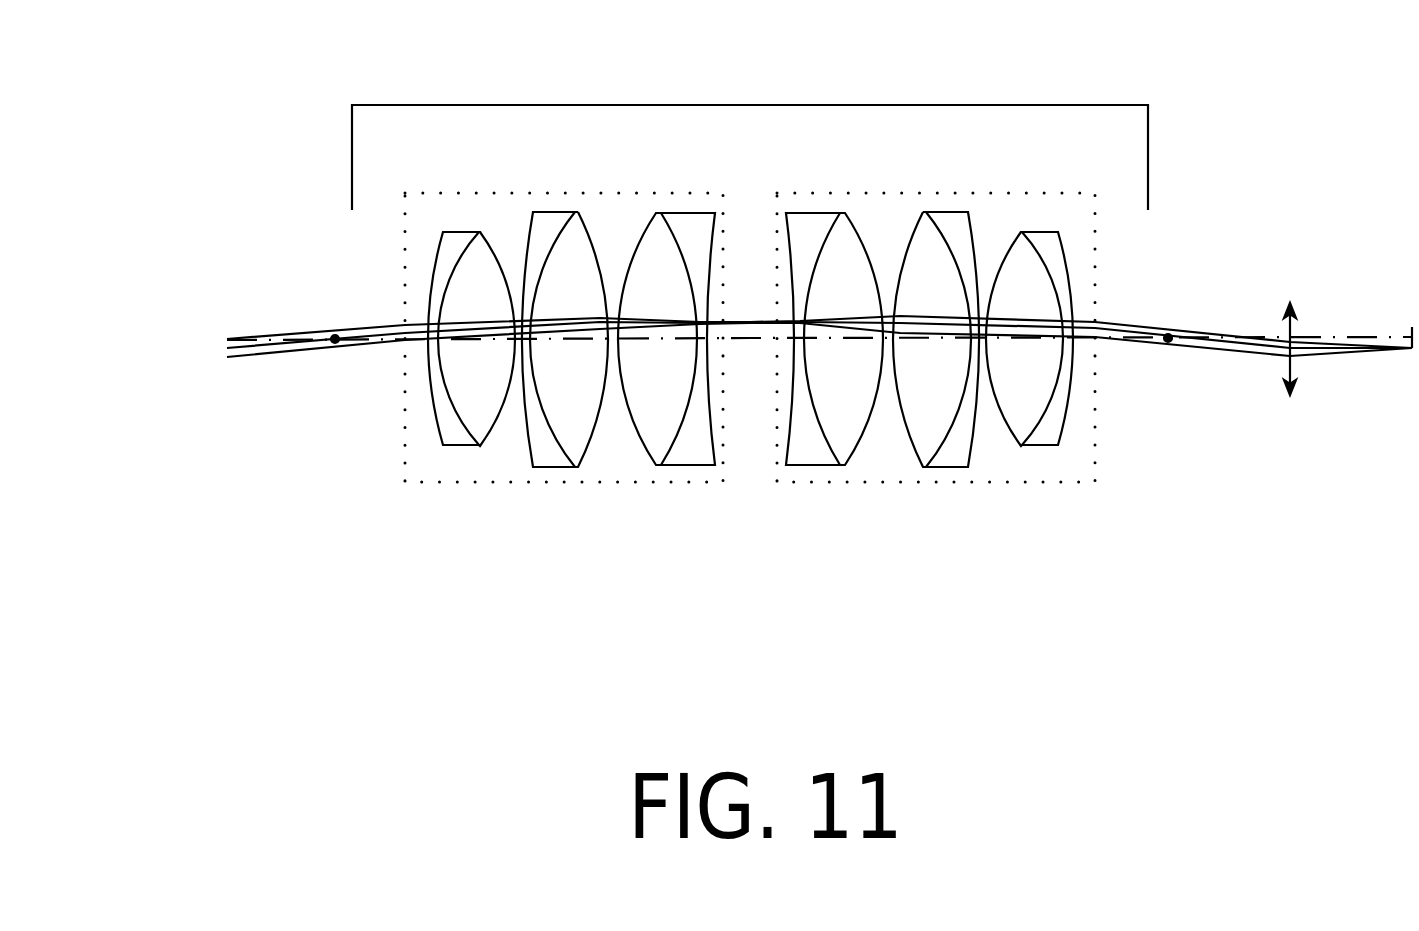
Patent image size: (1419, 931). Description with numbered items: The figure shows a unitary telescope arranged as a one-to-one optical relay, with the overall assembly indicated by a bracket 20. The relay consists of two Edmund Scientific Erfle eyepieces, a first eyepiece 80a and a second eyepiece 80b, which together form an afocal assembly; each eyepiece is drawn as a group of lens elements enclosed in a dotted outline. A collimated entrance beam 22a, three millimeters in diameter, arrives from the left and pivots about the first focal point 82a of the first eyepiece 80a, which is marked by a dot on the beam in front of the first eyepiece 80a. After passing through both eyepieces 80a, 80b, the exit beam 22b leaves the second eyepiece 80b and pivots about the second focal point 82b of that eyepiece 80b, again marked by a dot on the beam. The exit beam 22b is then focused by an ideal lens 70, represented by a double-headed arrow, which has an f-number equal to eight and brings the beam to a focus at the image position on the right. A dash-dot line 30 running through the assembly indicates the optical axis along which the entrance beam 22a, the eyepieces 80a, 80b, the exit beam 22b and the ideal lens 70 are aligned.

The optical system / lens assembly 20 is at (678, 105).
The first eyepiece 80a is at (542, 482).
The second eyepiece 80b is at (913, 482).
The first focal point 82a is at (335, 339).
The second focal point 82b is at (1168, 338).
The entrance beam 22a is at (272, 355).
The exit beam 22b is at (1222, 353).
The optical axis / image plane 30 is at (1323, 337).
The ideal lens 70 is at (1287, 397).